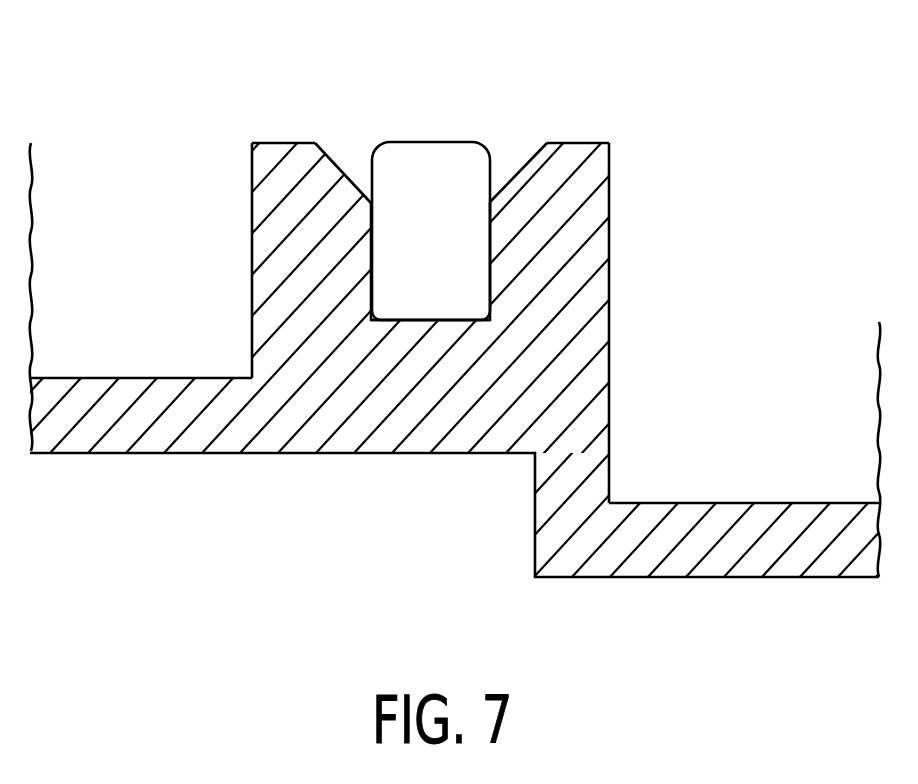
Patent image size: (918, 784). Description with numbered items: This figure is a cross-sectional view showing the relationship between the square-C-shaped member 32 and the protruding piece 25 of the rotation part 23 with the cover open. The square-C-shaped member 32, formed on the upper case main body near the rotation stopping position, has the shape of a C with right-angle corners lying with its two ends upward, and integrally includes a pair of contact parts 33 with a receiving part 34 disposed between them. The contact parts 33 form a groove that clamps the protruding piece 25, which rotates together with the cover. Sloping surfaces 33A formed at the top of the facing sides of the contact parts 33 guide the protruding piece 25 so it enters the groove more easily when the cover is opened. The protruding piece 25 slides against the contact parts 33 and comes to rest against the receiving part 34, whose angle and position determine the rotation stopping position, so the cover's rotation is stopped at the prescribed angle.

The rotation part 23 is at (416, 153).
The protruding piece 25 is at (457, 155).
The square-C-shaped member 32 is at (262, 165).
The contact parts 33 is at (258, 257).
The sloping surfaces 33A is at (328, 153).
The receiving part 34 is at (417, 318).